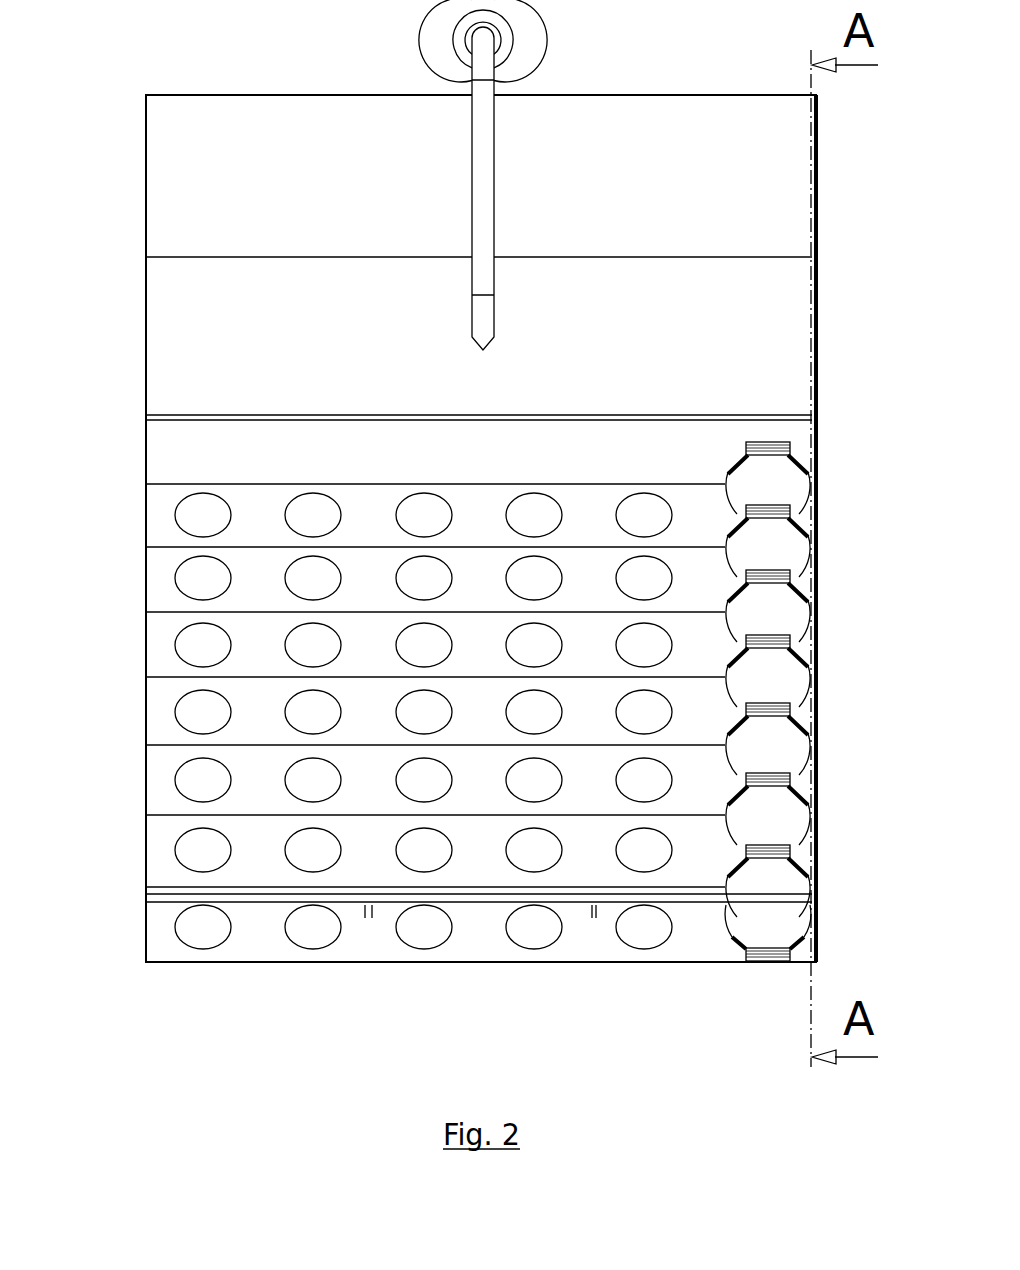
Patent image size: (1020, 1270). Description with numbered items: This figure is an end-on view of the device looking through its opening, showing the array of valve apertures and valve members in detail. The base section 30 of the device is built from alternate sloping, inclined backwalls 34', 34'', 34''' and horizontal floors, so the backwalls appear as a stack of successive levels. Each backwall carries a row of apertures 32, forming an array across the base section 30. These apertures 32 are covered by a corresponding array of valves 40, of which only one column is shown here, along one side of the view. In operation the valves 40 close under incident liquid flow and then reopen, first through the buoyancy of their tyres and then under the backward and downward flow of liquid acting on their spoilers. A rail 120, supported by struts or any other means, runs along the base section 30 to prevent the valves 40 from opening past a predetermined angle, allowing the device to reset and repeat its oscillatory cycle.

The base section 30 is at (252, 659).
The aperture 32 is at (200, 643).
The backwall 34' is at (390, 926).
The backwall 34'' is at (387, 852).
The backwall 34''' is at (387, 775).
The valve 40 is at (798, 626).
The rail 120 is at (606, 905).